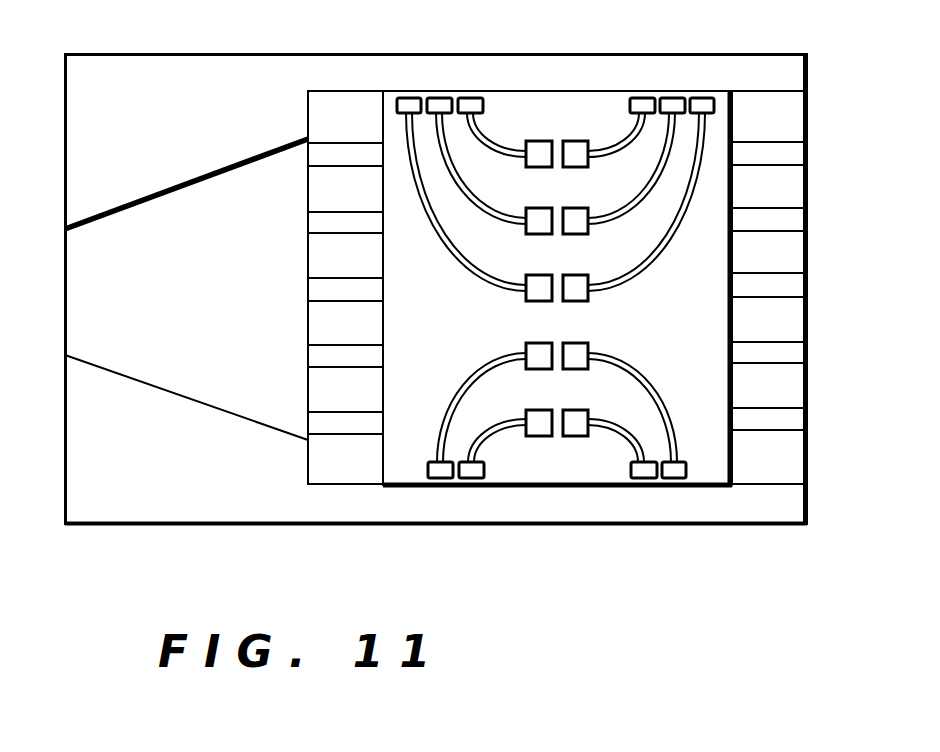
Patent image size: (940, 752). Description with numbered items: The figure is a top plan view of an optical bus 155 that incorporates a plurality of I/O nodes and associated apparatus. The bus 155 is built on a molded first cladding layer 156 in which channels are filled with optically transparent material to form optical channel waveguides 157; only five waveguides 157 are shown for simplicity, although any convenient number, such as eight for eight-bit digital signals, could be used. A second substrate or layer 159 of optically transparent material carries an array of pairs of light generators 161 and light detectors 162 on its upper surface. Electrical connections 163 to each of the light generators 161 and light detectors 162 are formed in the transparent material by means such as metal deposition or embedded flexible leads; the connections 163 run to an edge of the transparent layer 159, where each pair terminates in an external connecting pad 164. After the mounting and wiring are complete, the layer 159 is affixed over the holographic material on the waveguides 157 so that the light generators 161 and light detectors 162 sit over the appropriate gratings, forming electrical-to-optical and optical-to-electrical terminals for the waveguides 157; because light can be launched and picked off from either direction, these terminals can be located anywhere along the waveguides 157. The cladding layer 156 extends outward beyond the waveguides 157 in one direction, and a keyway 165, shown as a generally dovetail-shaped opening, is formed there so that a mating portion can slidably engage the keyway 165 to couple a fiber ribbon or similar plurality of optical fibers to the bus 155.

The optical bus 155 is at (556, 602).
The molded first cladding layer 156 is at (730, 508).
The optical channel waveguides 157 is at (796, 152).
The second substrate or layer of optically transparent material 159 is at (559, 476).
The light generators 161 is at (537, 140).
The light detectors 162 is at (575, 140).
The electrical connections 163 is at (472, 195).
The external connecting pad 164 is at (468, 97).
The keyway 165 is at (210, 297).